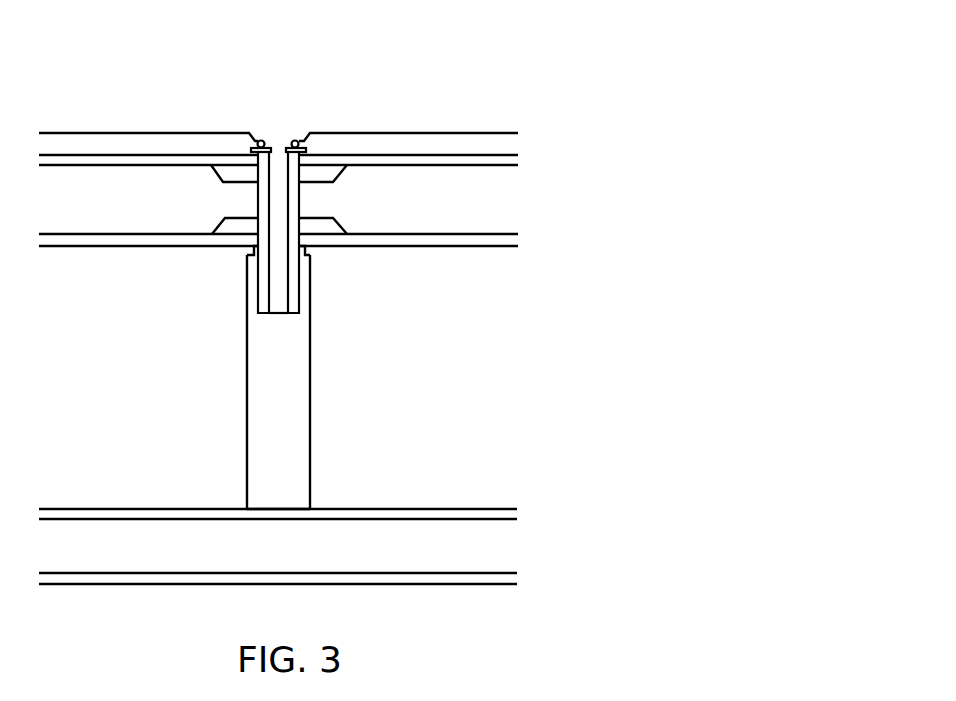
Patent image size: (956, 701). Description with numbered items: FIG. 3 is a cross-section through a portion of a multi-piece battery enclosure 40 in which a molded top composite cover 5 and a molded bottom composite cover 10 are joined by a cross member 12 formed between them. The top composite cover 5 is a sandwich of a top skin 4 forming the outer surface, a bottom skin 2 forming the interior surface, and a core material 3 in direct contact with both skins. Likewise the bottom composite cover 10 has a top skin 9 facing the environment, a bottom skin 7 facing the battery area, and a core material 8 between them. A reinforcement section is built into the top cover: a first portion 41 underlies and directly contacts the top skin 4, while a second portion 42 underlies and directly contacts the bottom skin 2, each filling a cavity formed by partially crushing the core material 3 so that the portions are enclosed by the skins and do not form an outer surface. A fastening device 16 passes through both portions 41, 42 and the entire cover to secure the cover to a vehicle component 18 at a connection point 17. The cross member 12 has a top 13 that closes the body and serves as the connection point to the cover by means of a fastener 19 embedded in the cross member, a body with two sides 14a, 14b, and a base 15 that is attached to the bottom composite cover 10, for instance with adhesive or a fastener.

The joint assembly 40 is at (629, 76).
The vehicle component 18 is at (443, 133).
The top composite cover 5 is at (305, 224).
The top skin 4 is at (511, 165).
The core material 3 is at (450, 233).
The bottom skin 2 is at (463, 241).
The first portion 41 is at (223, 170).
The second portion 42 is at (340, 224).
The fastening device 16 is at (279, 150).
The connection point 17 is at (300, 142).
The top 13 is at (313, 248).
The fastener 19 is at (290, 307).
The cross member 12 is at (283, 377).
The first side 14a is at (247, 392).
The second side 14b is at (310, 396).
The base 15 is at (246, 506).
The bottom composite cover 10 is at (312, 546).
The bottom skin 7 is at (392, 513).
The core material 8 is at (448, 525).
The top skin 9 is at (472, 576).